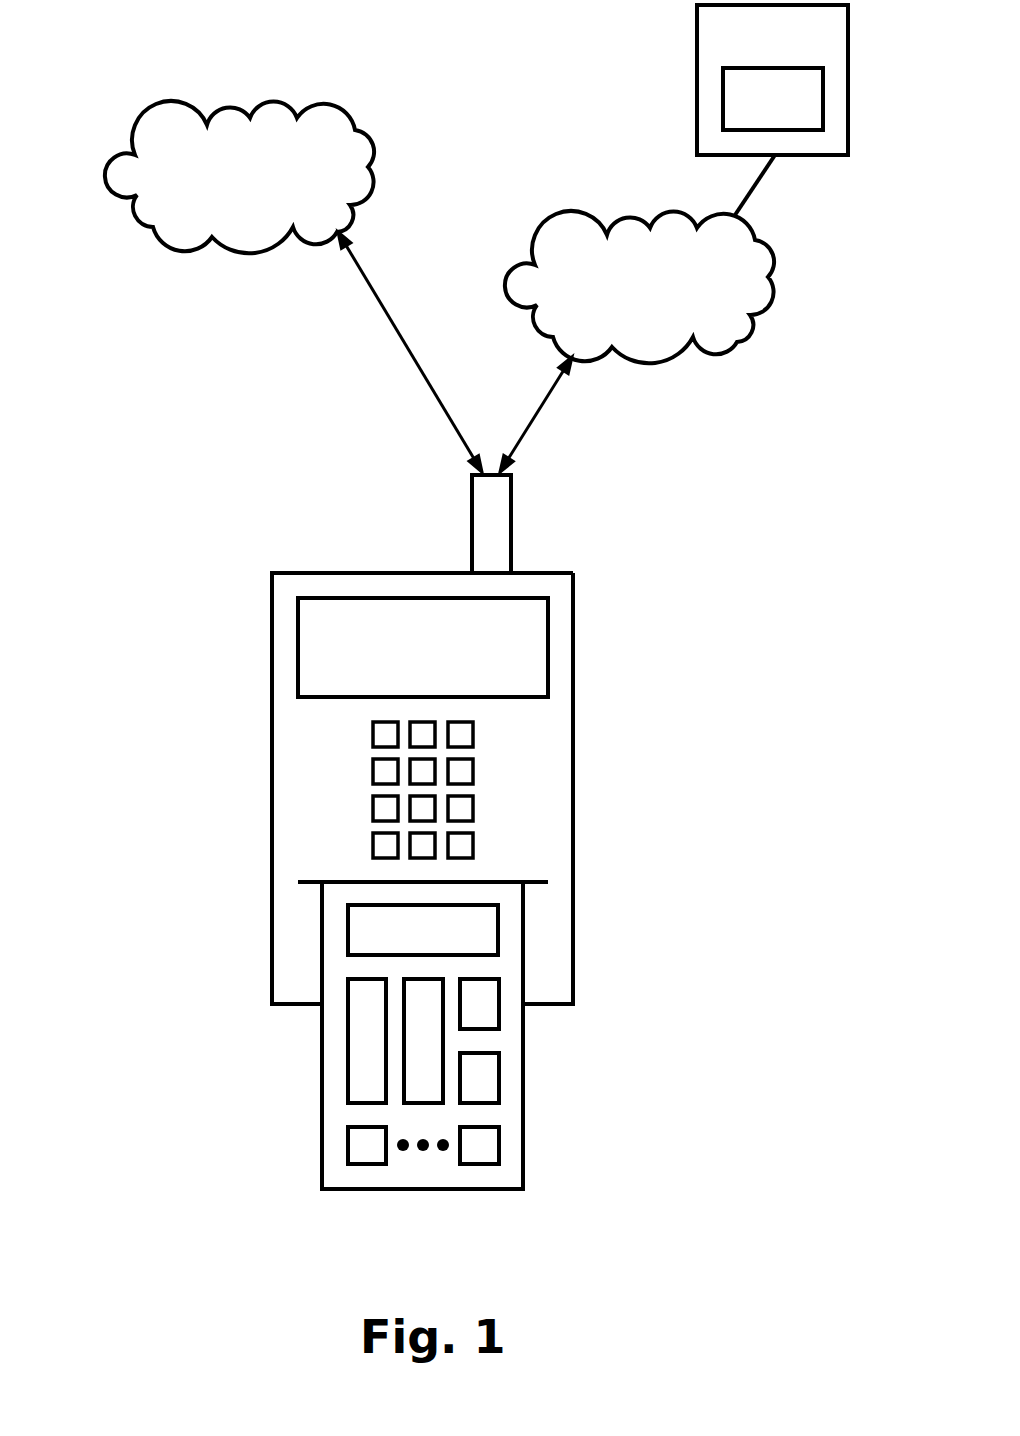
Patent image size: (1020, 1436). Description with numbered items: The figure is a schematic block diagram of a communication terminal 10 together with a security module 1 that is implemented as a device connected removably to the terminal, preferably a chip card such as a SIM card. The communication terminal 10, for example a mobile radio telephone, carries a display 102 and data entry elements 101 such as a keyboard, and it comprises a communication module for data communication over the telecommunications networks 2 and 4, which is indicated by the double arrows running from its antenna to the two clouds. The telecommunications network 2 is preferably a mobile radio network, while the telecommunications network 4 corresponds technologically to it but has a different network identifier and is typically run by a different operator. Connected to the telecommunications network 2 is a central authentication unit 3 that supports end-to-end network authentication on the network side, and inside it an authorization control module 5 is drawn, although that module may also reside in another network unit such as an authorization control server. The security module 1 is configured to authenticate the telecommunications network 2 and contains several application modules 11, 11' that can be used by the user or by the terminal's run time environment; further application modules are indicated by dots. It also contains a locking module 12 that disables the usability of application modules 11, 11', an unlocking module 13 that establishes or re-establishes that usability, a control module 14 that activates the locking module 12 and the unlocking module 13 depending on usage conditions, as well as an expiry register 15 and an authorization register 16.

The security module 1 is at (322, 1103).
The telecommunications network 2 is at (742, 328).
The central authentication unit 3 is at (708, 80).
The telecommunications network 4 is at (185, 215).
The authorization control module 5 is at (798, 105).
The communication terminal 10 is at (272, 822).
The application module 11 is at (276, 1169).
The application module 11' is at (572, 1175).
The locking module 12 is at (360, 1040).
The unlocking module 13 is at (423, 1078).
The control module 14 is at (360, 928).
The expiry register 15 is at (486, 1004).
The authorization register 16 is at (486, 1078).
The data entry element 101 is at (500, 808).
The display 102 is at (310, 660).